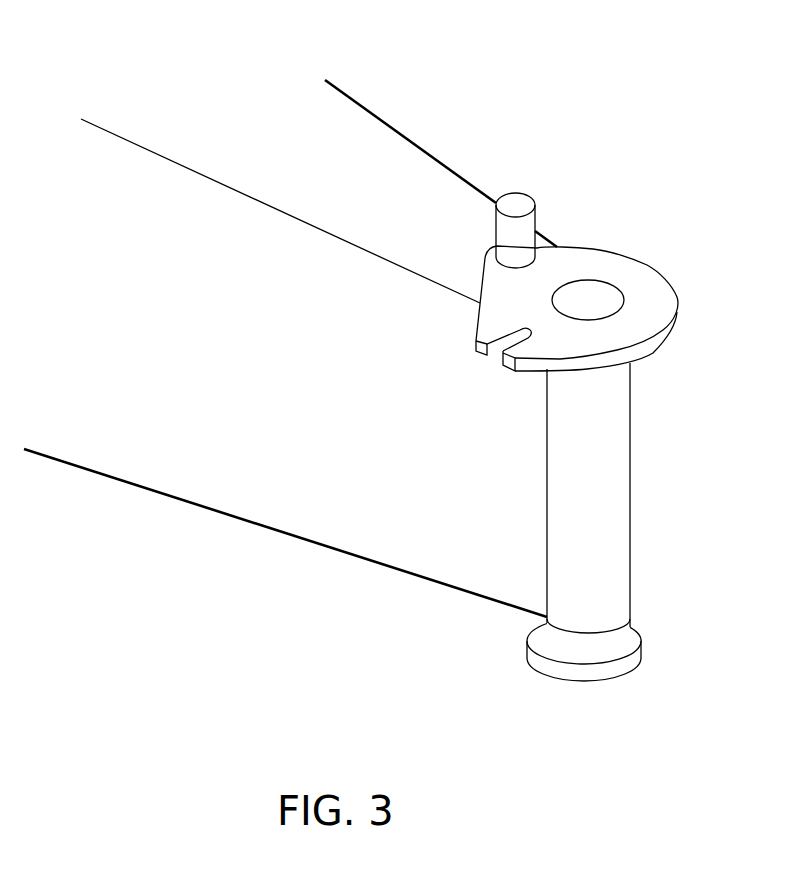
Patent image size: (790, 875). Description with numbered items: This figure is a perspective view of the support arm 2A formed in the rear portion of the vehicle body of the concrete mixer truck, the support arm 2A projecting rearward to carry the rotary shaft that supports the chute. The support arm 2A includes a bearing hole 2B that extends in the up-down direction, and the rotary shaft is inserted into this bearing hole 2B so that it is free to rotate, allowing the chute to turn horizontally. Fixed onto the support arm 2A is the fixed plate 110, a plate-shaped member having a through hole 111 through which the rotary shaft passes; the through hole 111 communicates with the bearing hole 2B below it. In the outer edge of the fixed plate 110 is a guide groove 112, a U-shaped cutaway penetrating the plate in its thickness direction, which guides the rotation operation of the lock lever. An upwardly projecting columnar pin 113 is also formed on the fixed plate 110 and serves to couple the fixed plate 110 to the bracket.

The support arm 2A is at (232, 130).
The bearing hole 2B is at (608, 307).
The fixed plate 110 is at (572, 265).
The through hole 111 is at (577, 298).
The guide groove 112 is at (500, 353).
The pin 113 is at (517, 200).